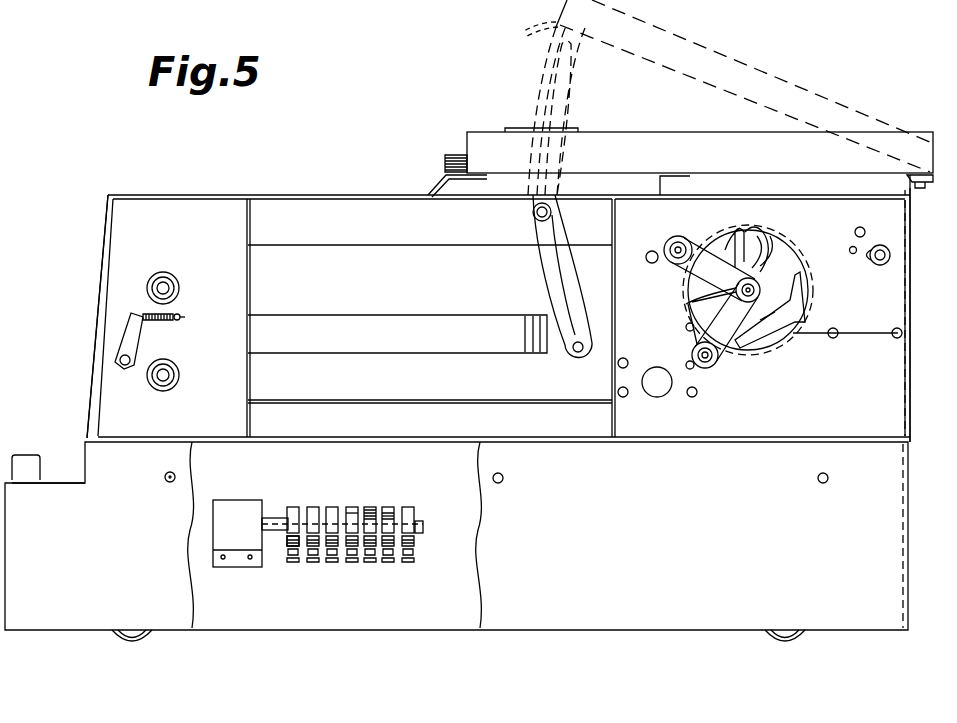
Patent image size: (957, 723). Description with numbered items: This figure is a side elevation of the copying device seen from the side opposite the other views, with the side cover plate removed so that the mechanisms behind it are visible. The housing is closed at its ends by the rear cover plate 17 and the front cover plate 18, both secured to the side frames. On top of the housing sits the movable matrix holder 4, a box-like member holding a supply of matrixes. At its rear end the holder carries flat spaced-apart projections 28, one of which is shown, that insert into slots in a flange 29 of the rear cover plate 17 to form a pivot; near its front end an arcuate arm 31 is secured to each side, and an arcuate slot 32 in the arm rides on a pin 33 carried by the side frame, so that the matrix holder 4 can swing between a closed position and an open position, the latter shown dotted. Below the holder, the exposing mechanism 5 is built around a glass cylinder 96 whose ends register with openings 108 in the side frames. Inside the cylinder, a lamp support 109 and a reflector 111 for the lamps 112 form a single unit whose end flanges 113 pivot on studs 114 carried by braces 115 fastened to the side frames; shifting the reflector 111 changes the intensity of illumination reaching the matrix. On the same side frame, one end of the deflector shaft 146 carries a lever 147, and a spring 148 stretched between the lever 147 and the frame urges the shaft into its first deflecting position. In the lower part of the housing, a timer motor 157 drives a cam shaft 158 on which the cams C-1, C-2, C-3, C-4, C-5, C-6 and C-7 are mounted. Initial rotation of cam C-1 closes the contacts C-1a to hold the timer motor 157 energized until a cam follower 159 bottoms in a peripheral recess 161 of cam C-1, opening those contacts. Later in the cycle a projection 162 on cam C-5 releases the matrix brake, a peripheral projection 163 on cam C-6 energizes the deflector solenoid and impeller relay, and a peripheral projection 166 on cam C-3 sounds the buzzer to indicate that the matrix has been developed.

The matrix holder 4 is at (615, 134).
The projections 28 is at (922, 186).
The flange 29 is at (917, 190).
The pins 33 is at (533, 212).
The arcuate arm 31 is at (537, 233).
The arcuate slots 32 is at (553, 275).
The front cover plate 18 is at (107, 258).
The spring 148 is at (163, 312).
The lever 147 is at (132, 337).
The shaft 146 is at (125, 366).
The rear cover plate 17 is at (903, 297).
The exposing mechanism 5 is at (781, 258).
The flanges 113 is at (695, 250).
The studs 114 is at (733, 343).
The braces 115 is at (690, 307).
The lamps 112 is at (763, 255).
The openings 108 is at (793, 267).
The reflector 111 is at (803, 286).
The glass cylinder 96 is at (808, 315).
The lamp support 109 is at (772, 322).
The timer motor 157 is at (223, 522).
The shaft 158 is at (278, 525).
The cam C-1 is at (293, 505).
The cam C-2 is at (313, 505).
The cam C-3 is at (332, 505).
The cam C-4 is at (352, 505).
The cam C-5 is at (370, 505).
The projection 162 is at (377, 510).
The cam C-6 is at (384, 512).
The peripheral projection 163 is at (395, 512).
The cam C-7 is at (412, 510).
The cam follower 159 is at (290, 545).
The contacts C-1a is at (296, 542).
The peripheral recess 161 is at (305, 542).
The peripheral projection 166 is at (335, 540).